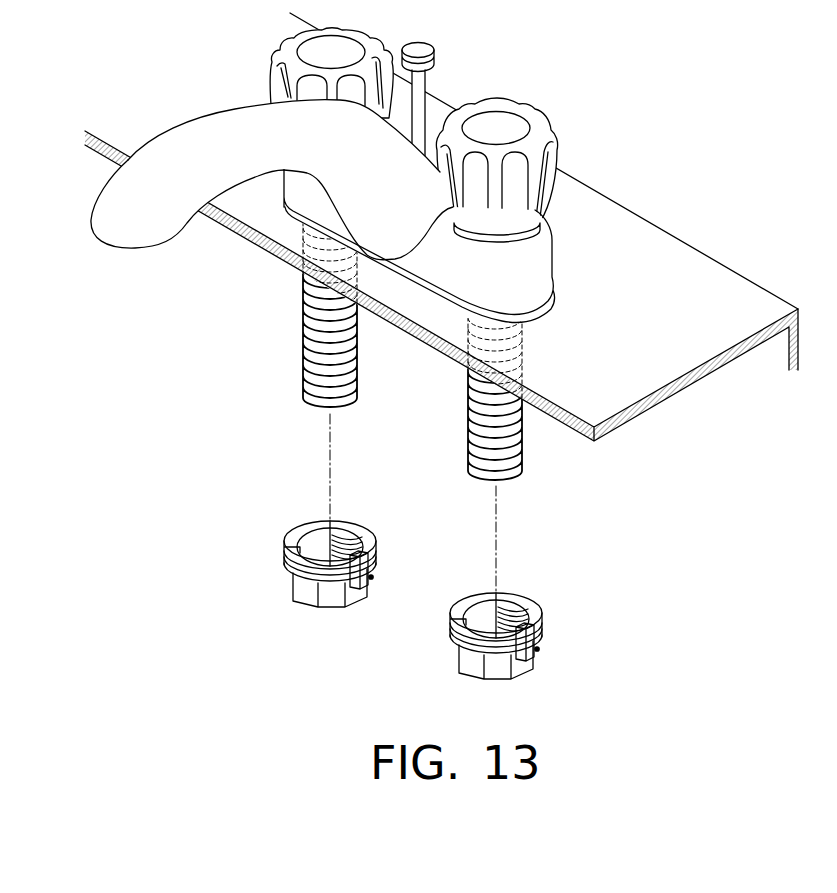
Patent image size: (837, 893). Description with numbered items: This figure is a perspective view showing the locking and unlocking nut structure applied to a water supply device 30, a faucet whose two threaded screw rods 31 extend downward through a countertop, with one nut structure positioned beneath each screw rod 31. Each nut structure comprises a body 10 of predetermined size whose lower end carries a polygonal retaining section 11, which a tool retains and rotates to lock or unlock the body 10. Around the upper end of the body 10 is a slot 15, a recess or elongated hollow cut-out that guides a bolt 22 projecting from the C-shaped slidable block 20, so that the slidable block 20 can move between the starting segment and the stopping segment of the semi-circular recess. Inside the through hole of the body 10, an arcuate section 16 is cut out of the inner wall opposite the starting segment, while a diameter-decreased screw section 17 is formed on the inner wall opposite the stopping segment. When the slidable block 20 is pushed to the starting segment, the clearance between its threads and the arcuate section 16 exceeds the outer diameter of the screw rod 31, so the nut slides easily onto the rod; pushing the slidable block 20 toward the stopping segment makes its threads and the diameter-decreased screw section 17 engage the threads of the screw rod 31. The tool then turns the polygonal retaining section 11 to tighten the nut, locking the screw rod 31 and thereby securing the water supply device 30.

The body 10 is at (422, 603).
The polygonal retaining section 11 is at (308, 597).
The slot 15 is at (336, 581).
The arcuate section 16 is at (312, 538).
The diameter-decreased screw section 17 is at (350, 537).
The slidable block 20 is at (368, 572).
The bolt 22 is at (372, 581).
The water supply device 30 is at (555, 237).
The screw rod (tube) 31 is at (303, 341).